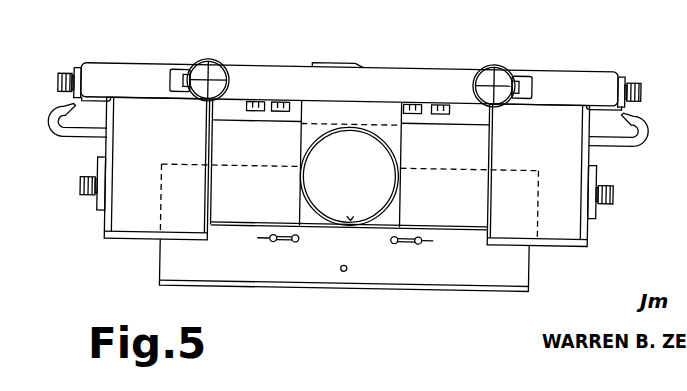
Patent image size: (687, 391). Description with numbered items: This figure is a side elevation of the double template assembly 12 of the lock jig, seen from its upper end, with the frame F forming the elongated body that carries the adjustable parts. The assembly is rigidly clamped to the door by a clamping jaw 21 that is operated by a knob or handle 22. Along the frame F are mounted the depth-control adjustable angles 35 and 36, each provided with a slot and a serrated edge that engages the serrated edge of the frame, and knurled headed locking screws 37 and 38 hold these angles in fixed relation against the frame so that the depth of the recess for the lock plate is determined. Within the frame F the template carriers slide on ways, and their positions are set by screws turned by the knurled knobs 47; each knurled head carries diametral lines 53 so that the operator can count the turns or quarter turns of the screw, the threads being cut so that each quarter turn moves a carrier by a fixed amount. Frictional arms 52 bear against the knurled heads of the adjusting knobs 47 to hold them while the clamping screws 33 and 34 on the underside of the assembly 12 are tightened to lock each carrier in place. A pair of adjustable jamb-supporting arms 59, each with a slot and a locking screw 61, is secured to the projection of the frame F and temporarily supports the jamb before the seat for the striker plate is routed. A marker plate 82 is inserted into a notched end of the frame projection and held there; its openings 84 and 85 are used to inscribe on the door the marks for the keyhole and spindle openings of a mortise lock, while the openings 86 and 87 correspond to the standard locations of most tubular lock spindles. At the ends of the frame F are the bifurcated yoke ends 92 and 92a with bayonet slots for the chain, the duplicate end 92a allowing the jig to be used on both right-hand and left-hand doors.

The frame F is at (93, 68).
The double template assembly 12 is at (560, 47).
The clamping jaw 21 is at (253, 224).
The knob or handle 22 is at (384, 163).
The clamping screw 33 is at (258, 102).
The clamping screw 34 is at (287, 102).
The adjustable angle 35 is at (79, 66).
The adjustable angle 36 is at (627, 74).
The knurled headed locking screw 37 is at (58, 80).
The knurled headed locking screw 38 is at (646, 92).
The knurled knob 47 is at (209, 74).
The frictional arm 52 is at (172, 80).
The diametral lines 53 is at (204, 90).
The adjustable jamb-supporting arm 59 is at (102, 204).
The locking screw 61 is at (80, 187).
The marker plate 82 is at (471, 287).
The opening 84 is at (297, 241).
The opening 85 is at (421, 243).
The opening 86 is at (347, 272).
The opening 87 is at (352, 215).
The yoke end 92 is at (72, 132).
The yoke end 92a is at (632, 147).